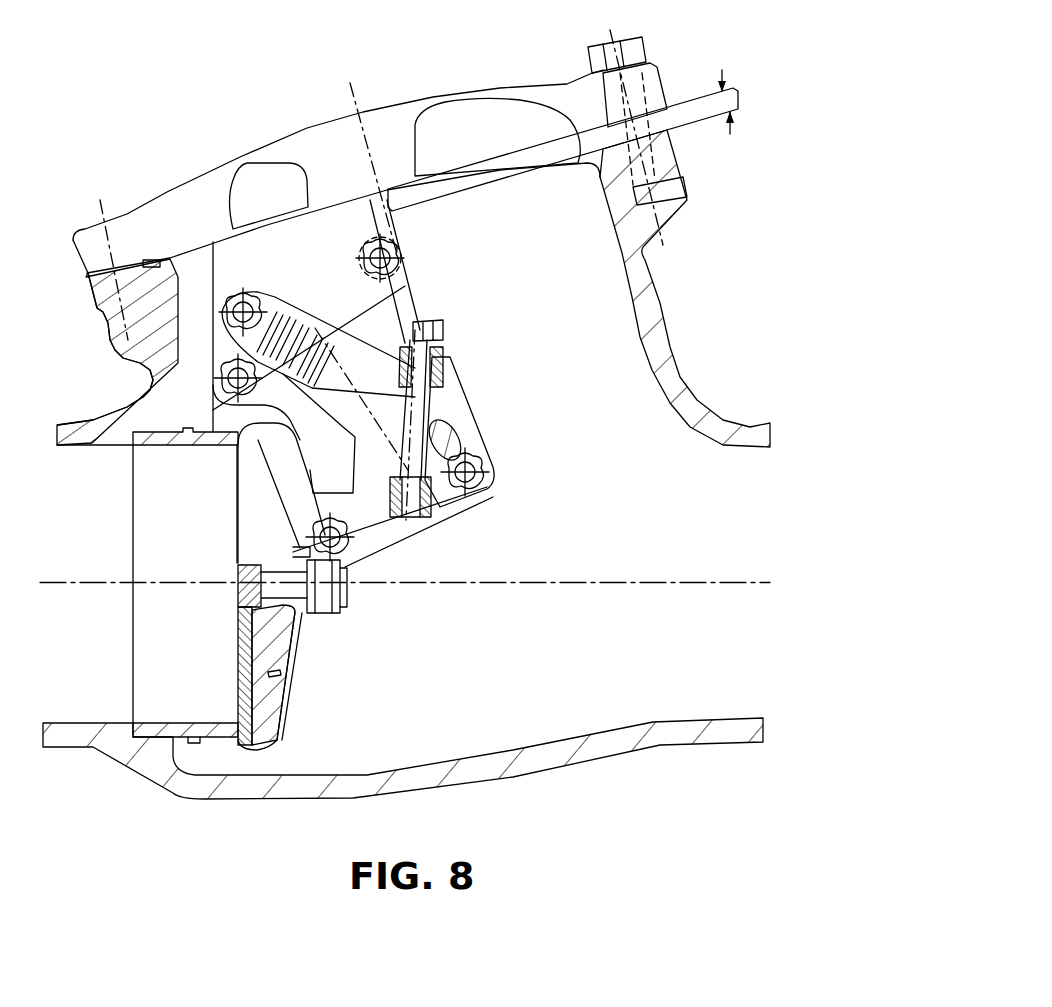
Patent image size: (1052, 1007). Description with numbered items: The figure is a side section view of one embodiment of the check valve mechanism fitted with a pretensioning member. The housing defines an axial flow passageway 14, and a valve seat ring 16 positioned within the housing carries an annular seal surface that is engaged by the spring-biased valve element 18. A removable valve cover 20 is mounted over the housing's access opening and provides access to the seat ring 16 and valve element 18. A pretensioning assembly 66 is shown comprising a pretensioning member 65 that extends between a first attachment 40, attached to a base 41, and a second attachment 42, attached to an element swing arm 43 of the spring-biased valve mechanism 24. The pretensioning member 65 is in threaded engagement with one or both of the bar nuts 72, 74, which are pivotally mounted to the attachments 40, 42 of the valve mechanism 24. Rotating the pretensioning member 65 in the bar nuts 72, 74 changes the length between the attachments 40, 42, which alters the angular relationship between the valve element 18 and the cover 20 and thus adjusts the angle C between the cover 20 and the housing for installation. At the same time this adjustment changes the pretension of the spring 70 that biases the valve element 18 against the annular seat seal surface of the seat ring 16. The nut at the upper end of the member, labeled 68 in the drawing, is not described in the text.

The axial flow passageway 14 is at (607, 584).
The valve seat ring 16 is at (276, 725).
The spring-biased valve element 18 is at (284, 688).
The valve cover 20 is at (387, 132).
The spring-biased valve mechanism 24 is at (538, 499).
The first attachment 40 is at (410, 293).
The base 41 is at (383, 233).
The second attachment 42 is at (373, 535).
The element swing arm 43 is at (297, 424).
The pretensioning member 65 is at (455, 402).
The pretensioning assembly 66 is at (526, 362).
The nut 68 is at (443, 322).
The spring 70 is at (305, 315).
The bar nut 72 is at (445, 368).
The bar nut 74 is at (427, 513).
The angle C is at (571, 140).